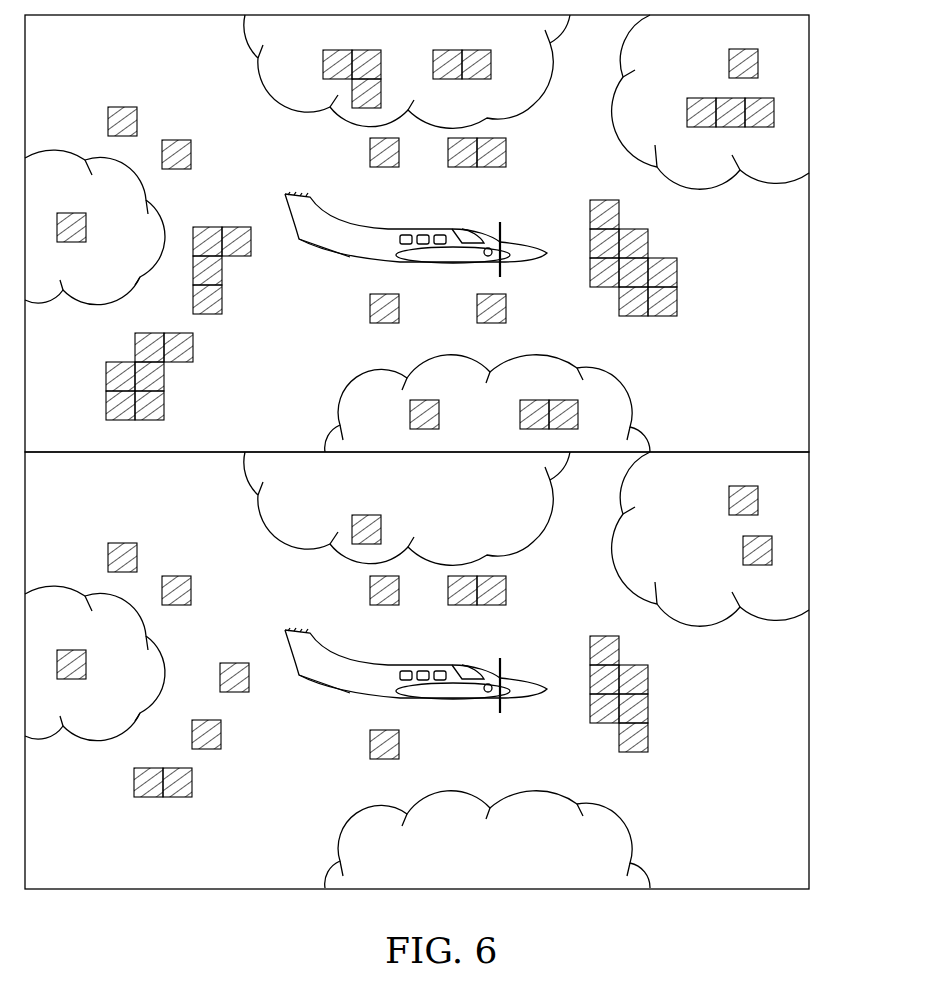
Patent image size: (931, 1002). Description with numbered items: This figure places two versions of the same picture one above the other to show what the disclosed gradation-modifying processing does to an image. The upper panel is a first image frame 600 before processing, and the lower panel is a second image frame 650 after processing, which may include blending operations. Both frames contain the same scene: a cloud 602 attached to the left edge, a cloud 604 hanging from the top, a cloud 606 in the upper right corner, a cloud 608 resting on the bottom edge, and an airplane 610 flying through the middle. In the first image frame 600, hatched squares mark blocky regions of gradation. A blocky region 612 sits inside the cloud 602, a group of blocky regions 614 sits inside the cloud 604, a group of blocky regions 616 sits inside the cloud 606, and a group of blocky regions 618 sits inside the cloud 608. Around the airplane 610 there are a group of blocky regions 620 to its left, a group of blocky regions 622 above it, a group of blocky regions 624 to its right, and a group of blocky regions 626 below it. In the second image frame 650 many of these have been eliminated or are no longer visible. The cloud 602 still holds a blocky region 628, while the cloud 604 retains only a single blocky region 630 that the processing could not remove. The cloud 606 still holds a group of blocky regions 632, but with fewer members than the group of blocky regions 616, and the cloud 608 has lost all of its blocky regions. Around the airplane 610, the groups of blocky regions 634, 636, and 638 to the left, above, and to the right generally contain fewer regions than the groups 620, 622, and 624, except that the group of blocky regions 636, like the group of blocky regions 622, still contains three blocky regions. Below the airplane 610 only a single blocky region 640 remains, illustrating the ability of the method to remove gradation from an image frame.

The first image frame 600 is at (809, 232).
The second image frame 650 is at (809, 670).
The cloud 602 is at (53, 146).
The cloud 604 is at (266, 98).
The cloud 606 is at (708, 184).
The cloud 608 is at (622, 380).
The airplane 610 is at (528, 248).
The blocky region 612 is at (87, 230).
The group of blocky regions 614 is at (508, 104).
The group of blocky regions 616 is at (697, 66).
The group of blocky regions 618 is at (362, 394).
The group of blocky regions 620 is at (257, 281).
The group of blocky regions 622 is at (413, 185).
The group of blocky regions 624 is at (593, 306).
The group of blocky regions 626 is at (378, 342).
The blocky region 628 is at (87, 663).
The blocky region 630 is at (382, 530).
The group of blocky regions 632 is at (697, 502).
The group of blocky regions 634 is at (259, 719).
The group of blocky regions 636 is at (417, 620).
The group of blocky regions 638 is at (593, 744).
The blocky region 640 is at (400, 745).